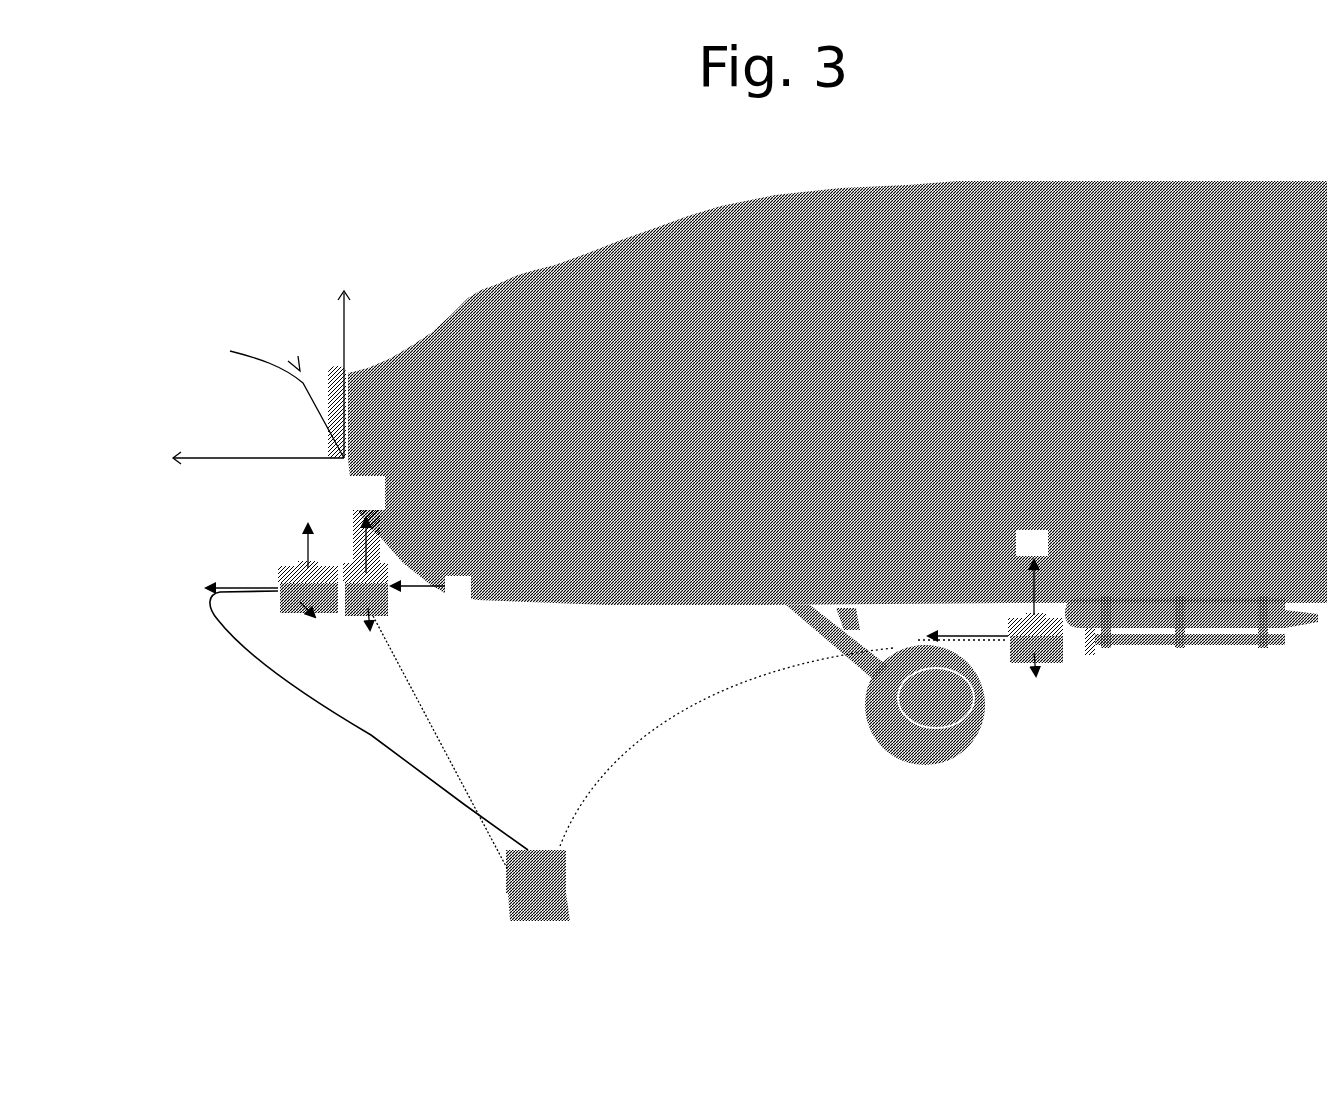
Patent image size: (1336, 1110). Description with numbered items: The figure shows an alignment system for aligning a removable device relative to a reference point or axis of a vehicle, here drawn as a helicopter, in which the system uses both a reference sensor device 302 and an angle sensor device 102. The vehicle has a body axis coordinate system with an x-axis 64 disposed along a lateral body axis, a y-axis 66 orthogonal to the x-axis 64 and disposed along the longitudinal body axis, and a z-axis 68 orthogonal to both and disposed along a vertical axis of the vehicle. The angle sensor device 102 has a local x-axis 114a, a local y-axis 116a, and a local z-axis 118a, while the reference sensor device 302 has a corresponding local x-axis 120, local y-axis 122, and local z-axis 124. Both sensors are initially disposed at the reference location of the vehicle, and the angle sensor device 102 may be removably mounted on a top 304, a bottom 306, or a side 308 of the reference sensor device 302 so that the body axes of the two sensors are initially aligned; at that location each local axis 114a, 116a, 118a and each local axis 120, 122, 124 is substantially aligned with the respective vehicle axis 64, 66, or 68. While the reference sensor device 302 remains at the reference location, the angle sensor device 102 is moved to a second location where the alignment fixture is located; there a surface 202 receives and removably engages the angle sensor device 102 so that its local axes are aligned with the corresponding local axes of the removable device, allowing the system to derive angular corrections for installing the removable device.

The x-axis 64 is at (273, 397).
The y-axis 66 is at (186, 450).
The z-axis 68 is at (333, 300).
The angle sensor device 102 is at (262, 563).
The local x-axis 114a is at (305, 595).
The local y-axis 116a is at (207, 585).
The local z-axis 118a is at (300, 541).
The local x-axis 120 is at (356, 610).
The local y-axis 122 is at (407, 578).
The local z-axis 124 is at (362, 515).
The surface 202 is at (1080, 650).
The reference sensor device 302 is at (412, 620).
The top 304 is at (348, 555).
The bottom 306 is at (370, 610).
The side 308 is at (340, 606).